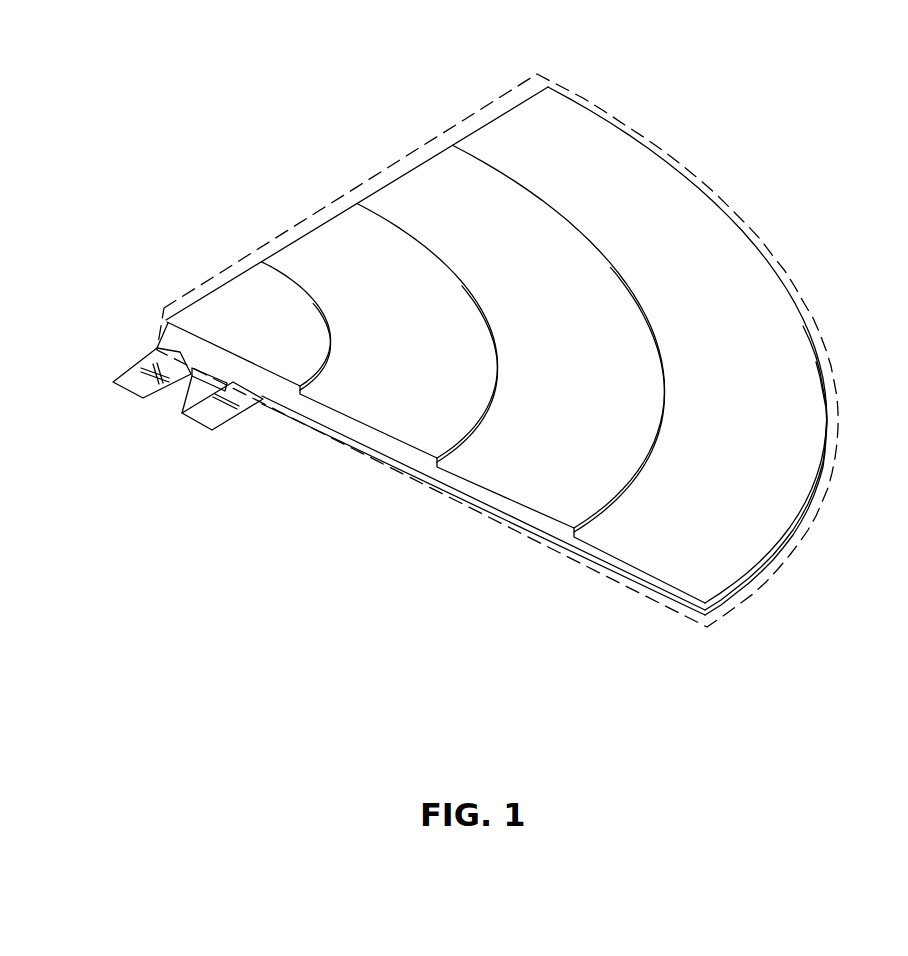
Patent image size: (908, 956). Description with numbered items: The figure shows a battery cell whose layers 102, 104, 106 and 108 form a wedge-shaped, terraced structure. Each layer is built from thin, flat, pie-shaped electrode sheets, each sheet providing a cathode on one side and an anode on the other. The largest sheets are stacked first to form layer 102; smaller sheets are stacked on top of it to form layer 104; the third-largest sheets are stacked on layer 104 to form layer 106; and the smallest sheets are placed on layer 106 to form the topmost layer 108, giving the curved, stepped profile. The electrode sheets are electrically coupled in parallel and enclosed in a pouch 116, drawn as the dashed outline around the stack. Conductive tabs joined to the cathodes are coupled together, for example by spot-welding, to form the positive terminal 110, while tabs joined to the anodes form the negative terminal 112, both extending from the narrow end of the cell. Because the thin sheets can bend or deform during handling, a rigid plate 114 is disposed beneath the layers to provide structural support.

The layer 102 is at (557, 142).
The layer 104 is at (435, 193).
The layer 106 is at (316, 265).
The layer 108 is at (194, 322).
The positive terminal 110 is at (135, 385).
The negative terminal 112 is at (210, 418).
The rigid plate 114 is at (647, 587).
The pouch 116 is at (785, 253).